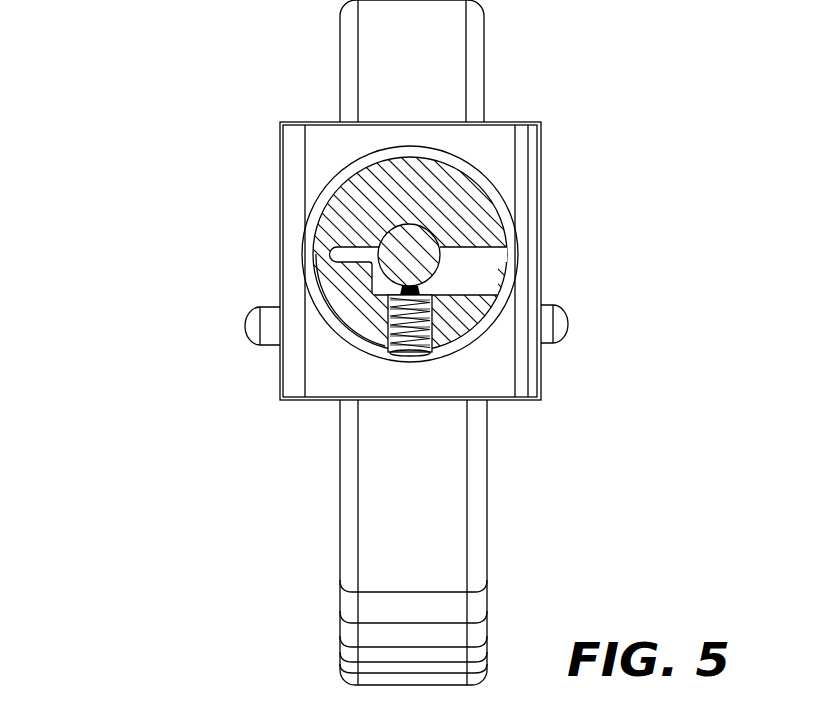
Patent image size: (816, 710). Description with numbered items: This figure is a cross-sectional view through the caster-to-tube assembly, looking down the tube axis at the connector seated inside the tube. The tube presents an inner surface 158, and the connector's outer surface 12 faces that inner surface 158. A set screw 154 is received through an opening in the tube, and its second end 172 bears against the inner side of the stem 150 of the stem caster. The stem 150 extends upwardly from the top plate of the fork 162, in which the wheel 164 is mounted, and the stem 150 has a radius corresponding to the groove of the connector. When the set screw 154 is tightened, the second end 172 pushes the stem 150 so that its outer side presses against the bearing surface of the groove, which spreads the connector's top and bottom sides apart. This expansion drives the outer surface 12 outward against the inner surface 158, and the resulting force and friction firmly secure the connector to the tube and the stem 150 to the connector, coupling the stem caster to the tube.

The outer surface 12 is at (492, 208).
The stem 150 is at (423, 250).
The set screw 154 is at (400, 290).
The inner surface 158 is at (475, 182).
The fork 162 is at (292, 163).
The wheel 164 is at (446, 24).
The second end 172 is at (405, 284).